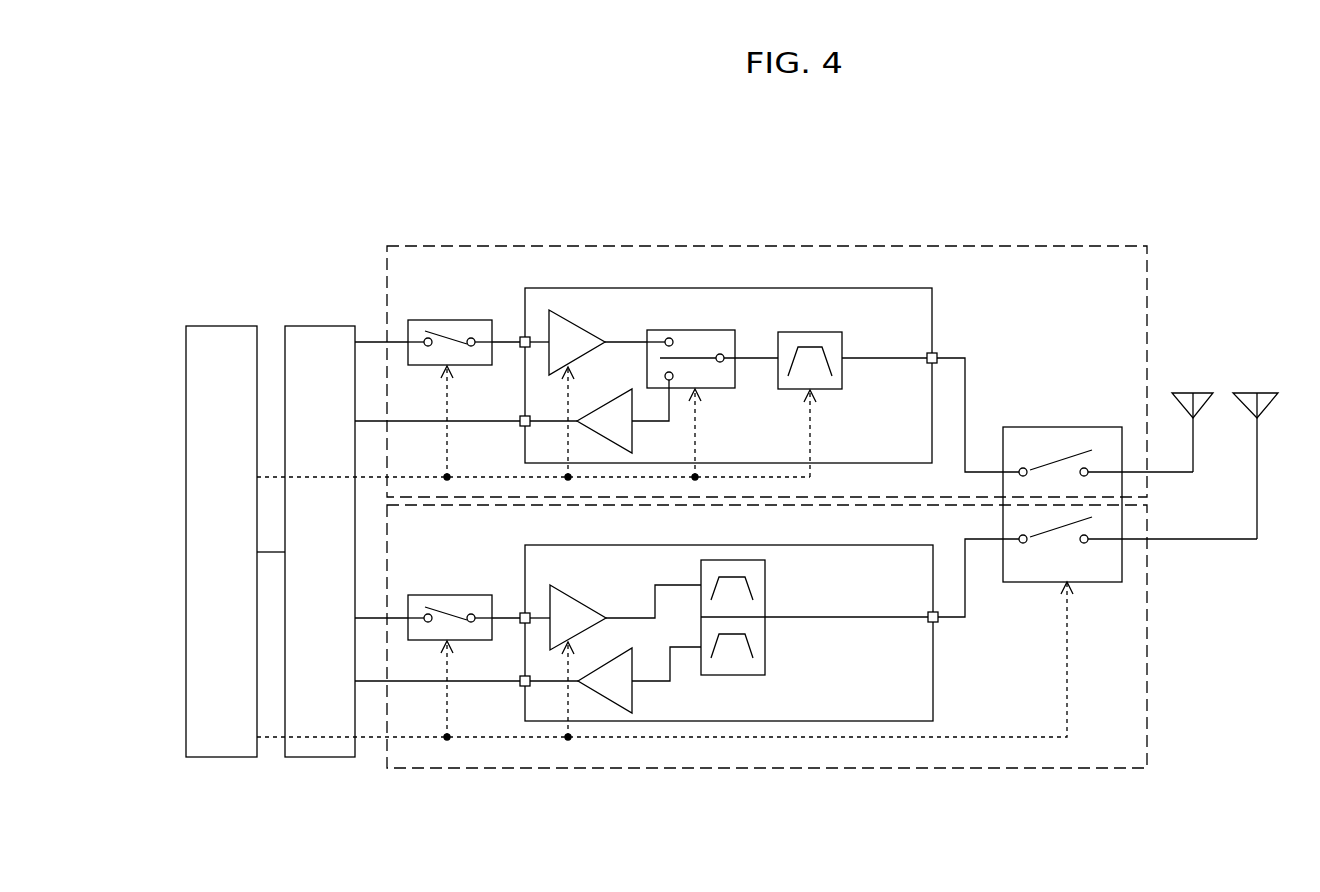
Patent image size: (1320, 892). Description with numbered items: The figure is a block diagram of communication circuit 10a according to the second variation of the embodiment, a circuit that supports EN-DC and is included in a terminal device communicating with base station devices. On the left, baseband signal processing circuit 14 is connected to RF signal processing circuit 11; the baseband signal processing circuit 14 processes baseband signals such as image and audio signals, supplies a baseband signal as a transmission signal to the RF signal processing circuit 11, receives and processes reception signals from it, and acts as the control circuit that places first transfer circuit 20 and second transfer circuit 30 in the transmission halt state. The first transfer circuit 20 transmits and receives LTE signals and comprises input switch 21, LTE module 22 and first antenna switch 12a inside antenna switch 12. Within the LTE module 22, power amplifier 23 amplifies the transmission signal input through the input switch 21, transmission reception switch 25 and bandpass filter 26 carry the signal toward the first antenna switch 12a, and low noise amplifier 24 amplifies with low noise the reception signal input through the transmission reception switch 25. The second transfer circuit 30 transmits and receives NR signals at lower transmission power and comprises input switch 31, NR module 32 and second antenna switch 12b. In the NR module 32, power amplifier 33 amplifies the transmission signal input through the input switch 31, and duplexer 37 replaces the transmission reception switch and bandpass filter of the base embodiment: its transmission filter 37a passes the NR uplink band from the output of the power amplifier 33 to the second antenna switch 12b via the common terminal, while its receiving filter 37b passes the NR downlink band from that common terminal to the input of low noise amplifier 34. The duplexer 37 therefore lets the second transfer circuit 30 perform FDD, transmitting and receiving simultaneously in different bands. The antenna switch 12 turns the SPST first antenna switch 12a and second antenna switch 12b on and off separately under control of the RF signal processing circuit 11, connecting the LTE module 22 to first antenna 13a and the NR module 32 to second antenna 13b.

The communication circuit 10a is at (1222, 214).
The RF signal processing circuit 11 is at (307, 325).
The antenna switch 12 is at (1036, 427).
The first antenna switch 12a is at (1060, 447).
The second antenna switch 12b is at (1066, 550).
The first antenna 13a is at (1195, 392).
The second antenna 13b is at (1265, 392).
The baseband signal processing circuit 14 is at (208, 325).
The first transfer circuit 20 is at (1030, 248).
The input switch 21 is at (468, 320).
The LTE module 22 is at (896, 288).
The power amplifier 23 is at (578, 328).
The low noise amplifier 24 is at (632, 436).
The transmission reception switch 25 is at (700, 330).
The bandpass filter 26 is at (815, 332).
The second transfer circuit 30 is at (1033, 770).
The input switch 31 is at (468, 595).
The NR module 32 is at (897, 545).
The power amplifier 33 is at (578, 601).
The low noise amplifier 34 is at (632, 695).
The duplexer 37 is at (737, 675).
The transmission filter 37a is at (758, 577).
The receiving filter 37b is at (758, 639).